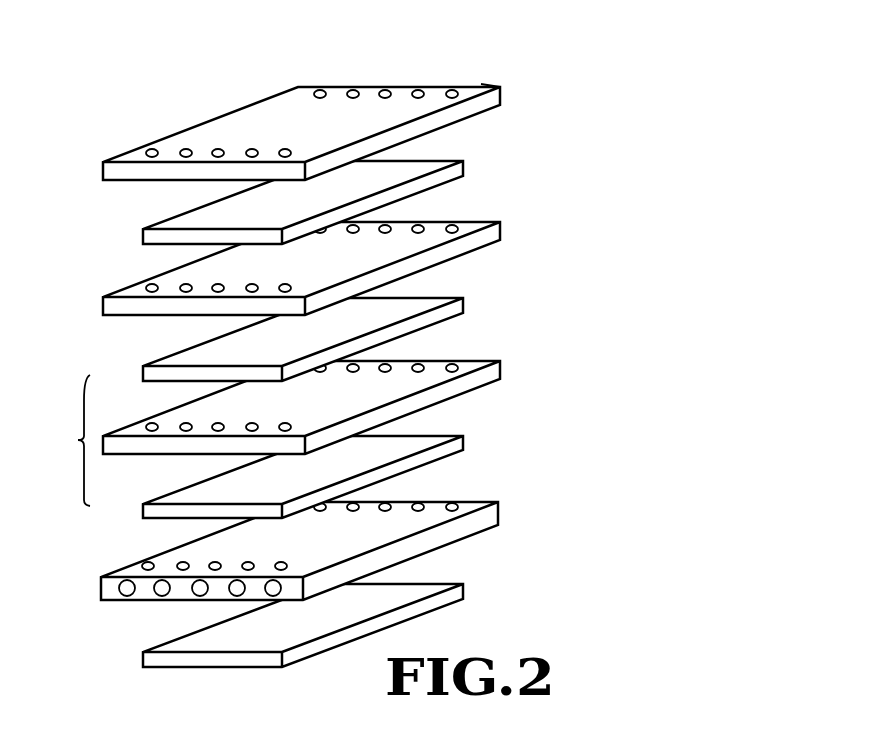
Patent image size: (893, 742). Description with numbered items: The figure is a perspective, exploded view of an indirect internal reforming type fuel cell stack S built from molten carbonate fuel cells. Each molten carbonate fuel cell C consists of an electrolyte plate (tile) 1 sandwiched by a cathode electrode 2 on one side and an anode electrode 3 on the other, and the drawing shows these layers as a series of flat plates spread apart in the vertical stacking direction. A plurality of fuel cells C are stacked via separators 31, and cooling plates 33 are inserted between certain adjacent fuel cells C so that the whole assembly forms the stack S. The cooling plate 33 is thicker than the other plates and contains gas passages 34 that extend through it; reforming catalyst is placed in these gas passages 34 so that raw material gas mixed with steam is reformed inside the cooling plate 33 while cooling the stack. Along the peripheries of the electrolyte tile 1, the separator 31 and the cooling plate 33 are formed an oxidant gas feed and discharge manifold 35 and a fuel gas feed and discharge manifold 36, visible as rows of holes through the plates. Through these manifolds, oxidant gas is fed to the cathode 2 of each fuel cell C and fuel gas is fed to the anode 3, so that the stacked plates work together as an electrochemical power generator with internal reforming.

The electrolyte plate 1 is at (503, 96).
The cathode electrode 2 is at (463, 304).
The anode electrode 3 is at (463, 168).
The separator 31 is at (502, 232).
The cooling plate 33 is at (502, 511).
The gas passages 34 is at (197, 590).
The oxidant gas feed and discharge manifold 35 is at (151, 150).
The fuel gas feed and discharge manifold 36 is at (186, 149).
The indirect internal reforming type fuel cell stack S is at (479, 84).
The molten carbonate fuel cell C is at (80, 440).